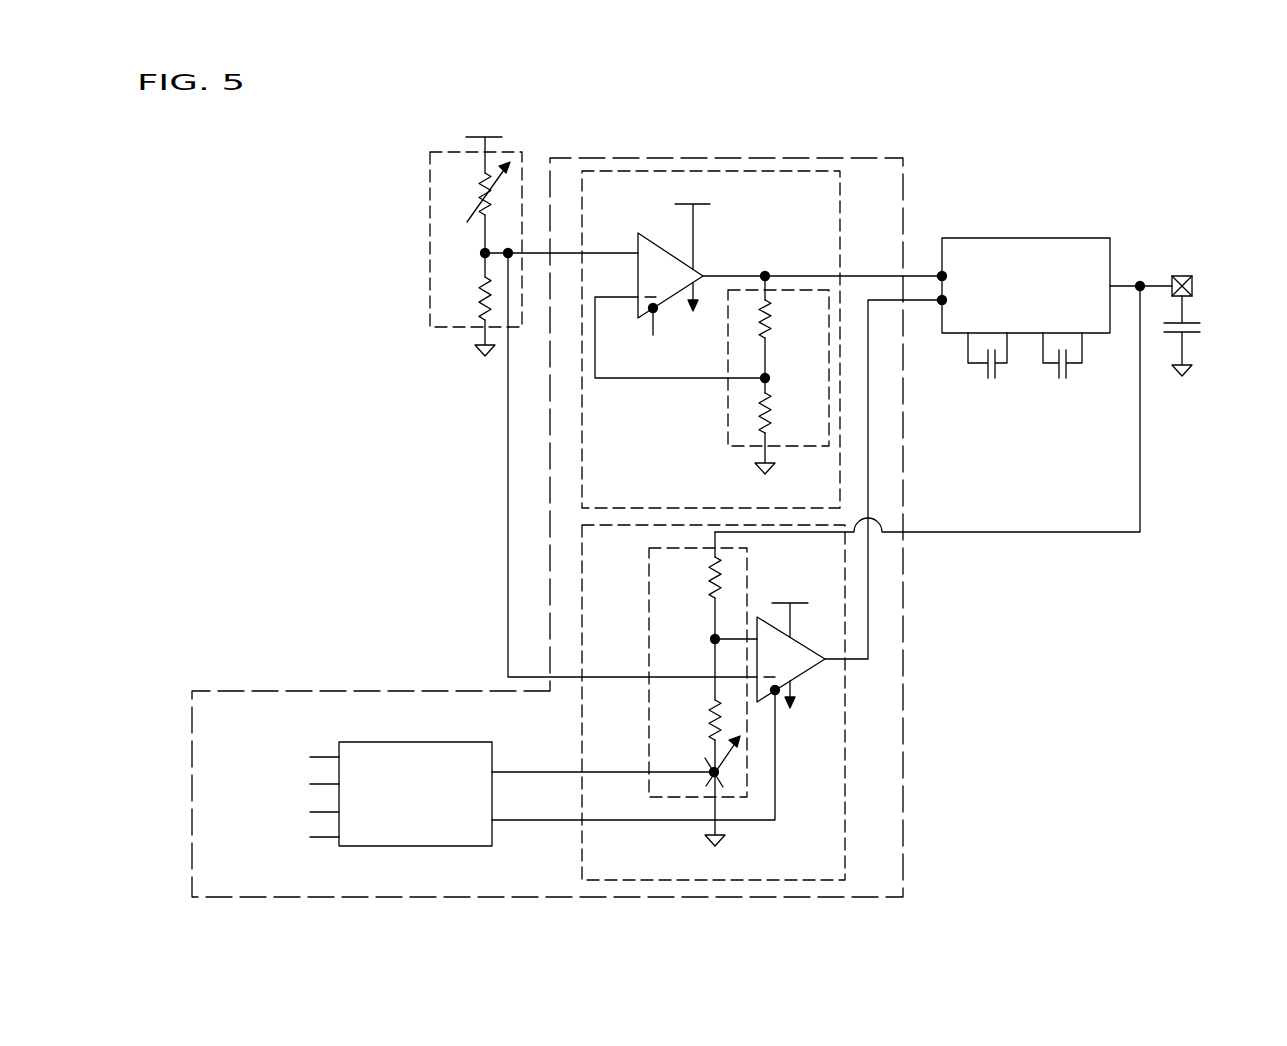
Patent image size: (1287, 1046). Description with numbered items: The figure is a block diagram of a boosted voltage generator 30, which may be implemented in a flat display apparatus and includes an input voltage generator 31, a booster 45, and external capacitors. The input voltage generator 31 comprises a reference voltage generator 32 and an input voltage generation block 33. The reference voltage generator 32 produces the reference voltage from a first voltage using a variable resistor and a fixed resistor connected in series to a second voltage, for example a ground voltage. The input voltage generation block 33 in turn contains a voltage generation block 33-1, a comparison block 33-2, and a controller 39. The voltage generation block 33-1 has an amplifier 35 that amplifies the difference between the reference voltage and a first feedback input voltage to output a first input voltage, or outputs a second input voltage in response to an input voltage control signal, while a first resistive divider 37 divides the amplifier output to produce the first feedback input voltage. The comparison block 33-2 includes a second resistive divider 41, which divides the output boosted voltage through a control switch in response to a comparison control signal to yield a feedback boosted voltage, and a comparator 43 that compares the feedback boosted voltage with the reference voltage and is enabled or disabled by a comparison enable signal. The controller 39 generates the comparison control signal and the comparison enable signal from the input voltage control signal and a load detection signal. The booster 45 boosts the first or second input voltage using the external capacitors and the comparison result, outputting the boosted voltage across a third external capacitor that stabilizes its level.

The boosted voltage generator 30 is at (1206, 84).
The input voltage generator 31 is at (842, 92).
The reference voltage generator 32 is at (518, 150).
The input voltage generation block 33 is at (841, 158).
The voltage generation block 33-1 is at (758, 171).
The comparison block 33-2 is at (846, 743).
The amplifier 35 is at (638, 233).
The first resistive divider 37 is at (728, 421).
The controller 39 is at (473, 742).
The second resistive divider 41 is at (650, 571).
The comparator 43 is at (802, 647).
The booster 45 is at (1077, 238).